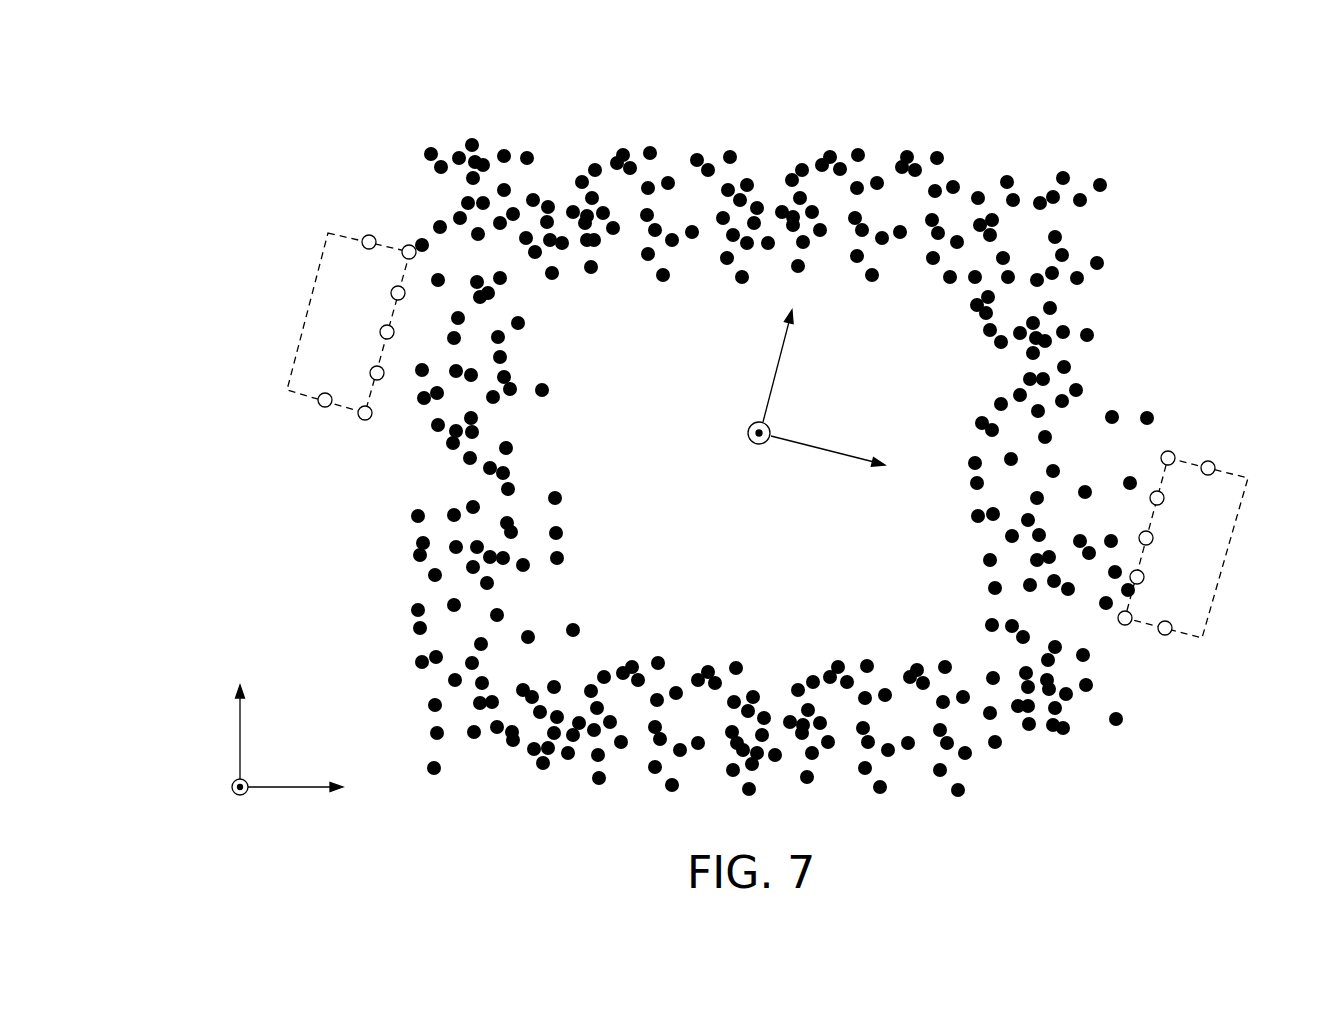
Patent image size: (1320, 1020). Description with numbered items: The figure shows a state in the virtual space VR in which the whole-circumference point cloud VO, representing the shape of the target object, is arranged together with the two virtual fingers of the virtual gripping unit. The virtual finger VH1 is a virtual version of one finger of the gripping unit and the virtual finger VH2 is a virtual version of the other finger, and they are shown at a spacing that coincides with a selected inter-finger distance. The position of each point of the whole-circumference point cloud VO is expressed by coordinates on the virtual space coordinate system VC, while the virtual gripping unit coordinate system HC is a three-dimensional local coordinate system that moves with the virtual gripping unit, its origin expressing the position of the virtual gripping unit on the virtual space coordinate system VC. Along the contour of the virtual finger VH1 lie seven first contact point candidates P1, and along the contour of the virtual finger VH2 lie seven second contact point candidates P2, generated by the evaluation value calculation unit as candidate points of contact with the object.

The virtual space VR is at (305, 75).
The whole-circumference point cloud VO is at (756, 136).
The virtual finger VH1 is at (307, 318).
The virtual finger VH2 is at (1232, 472).
The first contact point candidate P1 is at (409, 237).
The second contact point candidate P2 is at (1125, 642).
The virtual gripping unit coordinate system HC is at (789, 409).
The virtual space coordinate system VC is at (259, 773).